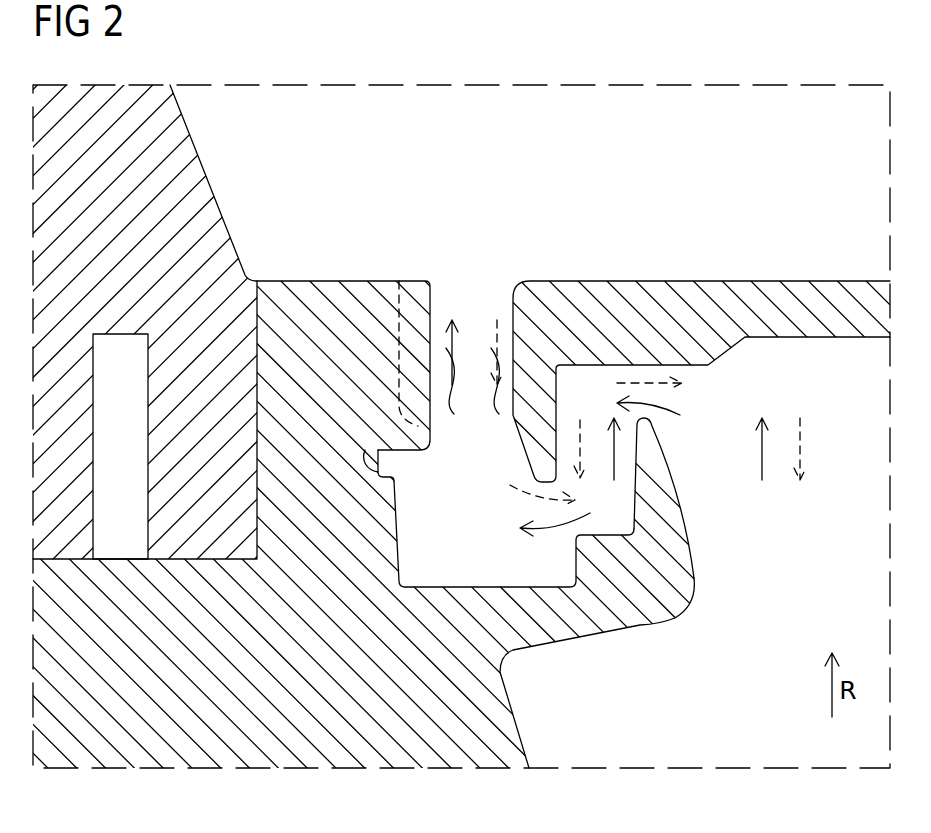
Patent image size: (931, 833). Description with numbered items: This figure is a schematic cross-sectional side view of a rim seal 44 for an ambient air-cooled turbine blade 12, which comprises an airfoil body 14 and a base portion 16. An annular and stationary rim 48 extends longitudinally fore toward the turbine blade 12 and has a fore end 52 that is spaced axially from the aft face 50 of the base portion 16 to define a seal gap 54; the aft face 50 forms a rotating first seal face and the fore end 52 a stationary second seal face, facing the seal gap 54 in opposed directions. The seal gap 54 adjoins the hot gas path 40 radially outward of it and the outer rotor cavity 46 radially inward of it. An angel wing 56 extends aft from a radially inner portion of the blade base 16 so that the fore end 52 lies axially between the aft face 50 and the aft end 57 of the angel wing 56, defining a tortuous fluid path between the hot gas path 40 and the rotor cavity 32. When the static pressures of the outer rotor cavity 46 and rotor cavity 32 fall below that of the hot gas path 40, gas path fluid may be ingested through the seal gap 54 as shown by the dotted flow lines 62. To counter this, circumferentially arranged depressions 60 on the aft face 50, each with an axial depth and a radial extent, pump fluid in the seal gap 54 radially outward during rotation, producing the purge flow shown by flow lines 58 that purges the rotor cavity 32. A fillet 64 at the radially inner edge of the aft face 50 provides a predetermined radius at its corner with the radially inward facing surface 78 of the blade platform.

The turbine blade 12 is at (243, 205).
The airfoil body 14 is at (197, 160).
The base portion 16 is at (330, 312).
The rotor cavity 32 is at (718, 699).
The hot gas path 40 is at (575, 179).
The rim seal 44 is at (672, 150).
The outer rotor cavity 46 is at (476, 532).
The annular rim 48 is at (743, 297).
The aft face 50 is at (432, 300).
The fore end 52 is at (497, 310).
The seal gap 54 is at (470, 310).
The angel wing 56 is at (598, 608).
The aft end 57 is at (675, 538).
The flow lines 58 is at (763, 455).
The depressions 60 is at (412, 362).
The dotted flow lines 62 is at (835, 447).
The fillet 64 is at (430, 450).
The radially inward facing surface 78 is at (380, 477).